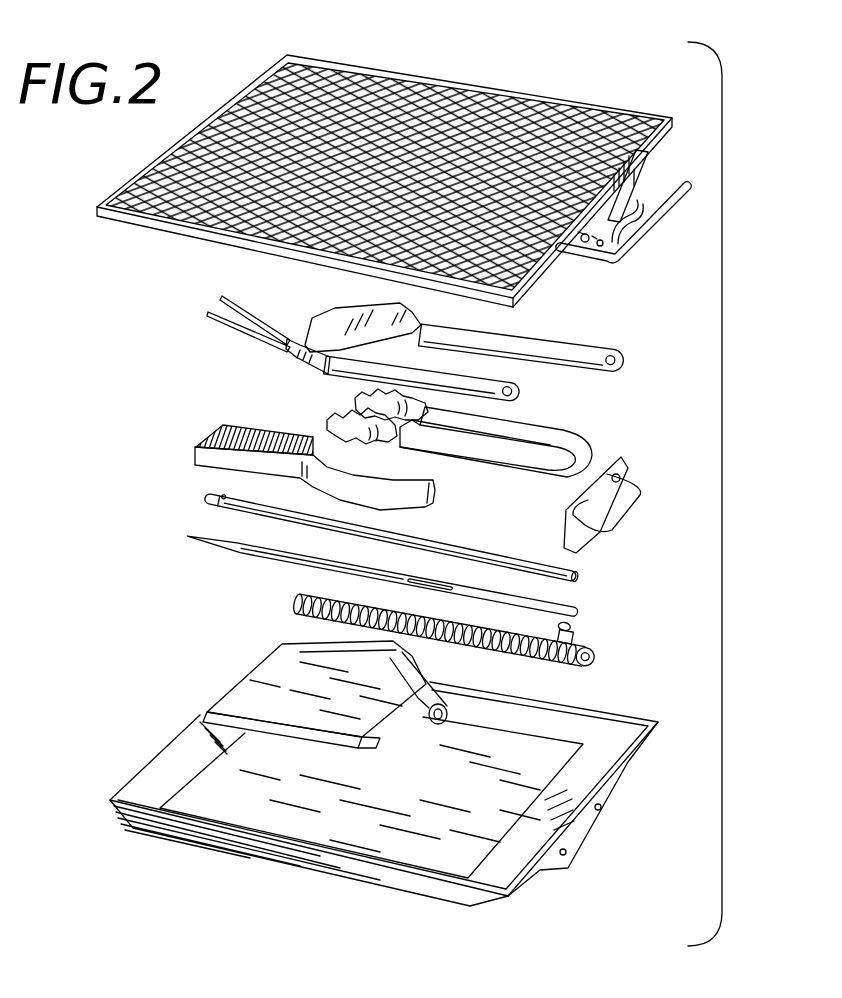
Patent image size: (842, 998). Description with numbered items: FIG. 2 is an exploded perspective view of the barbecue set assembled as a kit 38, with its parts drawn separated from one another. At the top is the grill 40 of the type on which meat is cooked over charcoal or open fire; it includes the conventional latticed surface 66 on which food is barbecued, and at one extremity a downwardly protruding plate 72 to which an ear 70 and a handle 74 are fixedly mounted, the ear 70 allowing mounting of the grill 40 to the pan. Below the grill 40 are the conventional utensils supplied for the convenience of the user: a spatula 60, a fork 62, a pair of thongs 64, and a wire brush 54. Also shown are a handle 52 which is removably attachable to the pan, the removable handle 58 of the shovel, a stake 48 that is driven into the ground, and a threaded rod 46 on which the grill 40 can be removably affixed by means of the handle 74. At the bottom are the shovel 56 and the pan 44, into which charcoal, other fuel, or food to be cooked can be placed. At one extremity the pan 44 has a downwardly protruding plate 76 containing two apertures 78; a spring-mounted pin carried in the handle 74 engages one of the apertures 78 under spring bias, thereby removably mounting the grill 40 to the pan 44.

The kit 38 is at (729, 487).
The grill 40 is at (381, 169).
The latticed surface 66 is at (405, 113).
The downwardly protruding plate 72 is at (633, 172).
The ear 70 is at (640, 200).
The handle 74 is at (650, 226).
The spatula 60 is at (543, 343).
The fork 62 is at (303, 352).
The pair of thongs 64 is at (547, 428).
The wire brush 54 is at (205, 446).
The handle 52 is at (573, 503).
The removable handle 58 is at (580, 572).
The stake 48 is at (258, 550).
The threaded rod 46 is at (300, 604).
The shovel 56 is at (262, 678).
The pan 44 is at (390, 794).
The downwardly protruding plate 76 is at (590, 828).
The apertures 78 is at (605, 807).